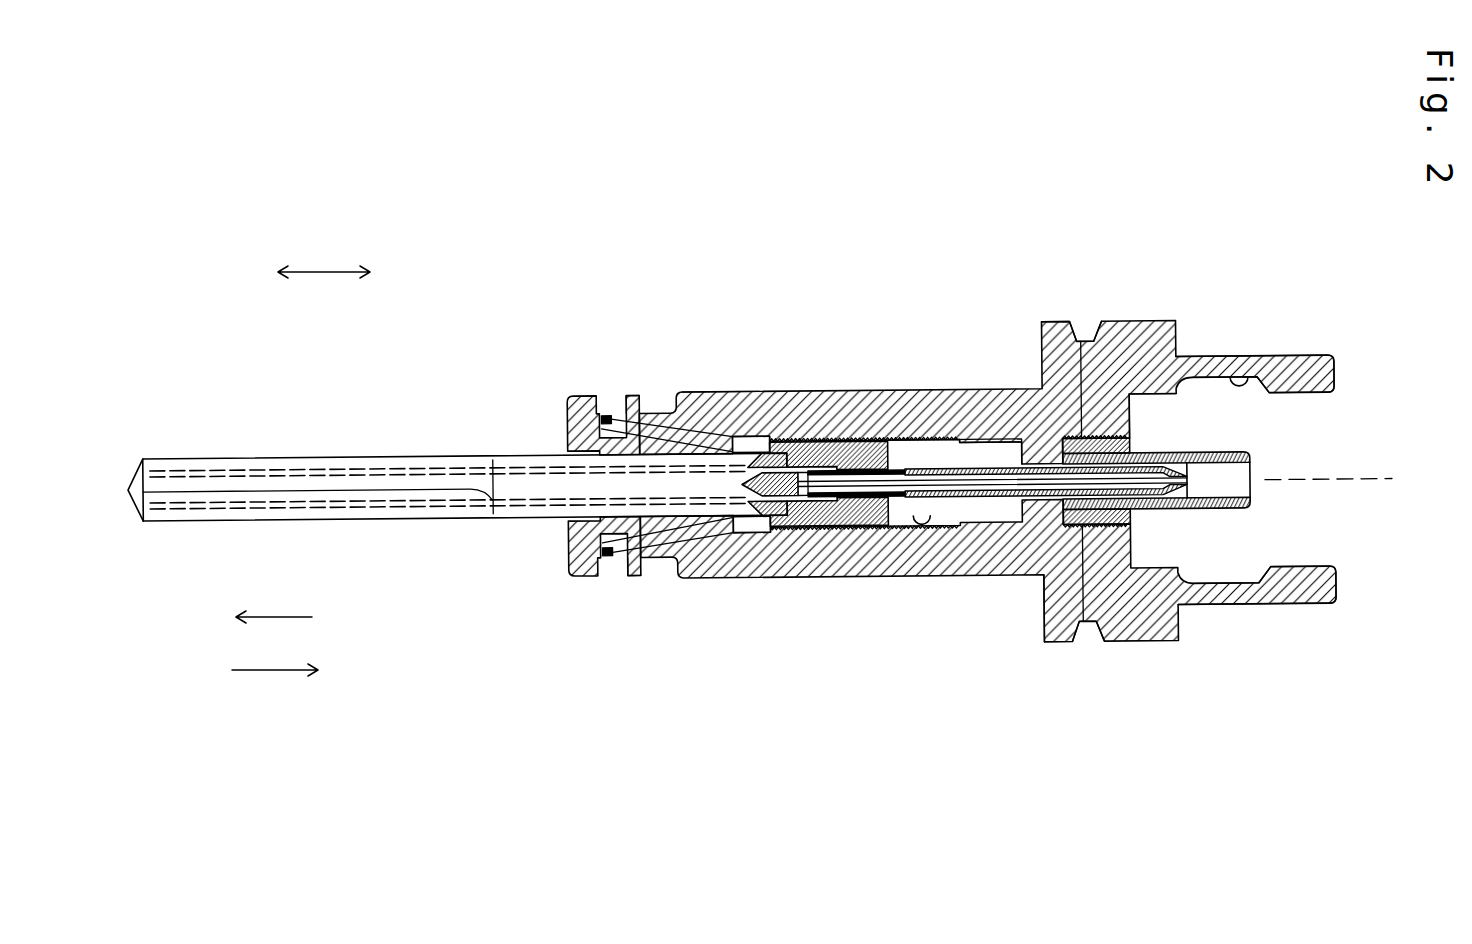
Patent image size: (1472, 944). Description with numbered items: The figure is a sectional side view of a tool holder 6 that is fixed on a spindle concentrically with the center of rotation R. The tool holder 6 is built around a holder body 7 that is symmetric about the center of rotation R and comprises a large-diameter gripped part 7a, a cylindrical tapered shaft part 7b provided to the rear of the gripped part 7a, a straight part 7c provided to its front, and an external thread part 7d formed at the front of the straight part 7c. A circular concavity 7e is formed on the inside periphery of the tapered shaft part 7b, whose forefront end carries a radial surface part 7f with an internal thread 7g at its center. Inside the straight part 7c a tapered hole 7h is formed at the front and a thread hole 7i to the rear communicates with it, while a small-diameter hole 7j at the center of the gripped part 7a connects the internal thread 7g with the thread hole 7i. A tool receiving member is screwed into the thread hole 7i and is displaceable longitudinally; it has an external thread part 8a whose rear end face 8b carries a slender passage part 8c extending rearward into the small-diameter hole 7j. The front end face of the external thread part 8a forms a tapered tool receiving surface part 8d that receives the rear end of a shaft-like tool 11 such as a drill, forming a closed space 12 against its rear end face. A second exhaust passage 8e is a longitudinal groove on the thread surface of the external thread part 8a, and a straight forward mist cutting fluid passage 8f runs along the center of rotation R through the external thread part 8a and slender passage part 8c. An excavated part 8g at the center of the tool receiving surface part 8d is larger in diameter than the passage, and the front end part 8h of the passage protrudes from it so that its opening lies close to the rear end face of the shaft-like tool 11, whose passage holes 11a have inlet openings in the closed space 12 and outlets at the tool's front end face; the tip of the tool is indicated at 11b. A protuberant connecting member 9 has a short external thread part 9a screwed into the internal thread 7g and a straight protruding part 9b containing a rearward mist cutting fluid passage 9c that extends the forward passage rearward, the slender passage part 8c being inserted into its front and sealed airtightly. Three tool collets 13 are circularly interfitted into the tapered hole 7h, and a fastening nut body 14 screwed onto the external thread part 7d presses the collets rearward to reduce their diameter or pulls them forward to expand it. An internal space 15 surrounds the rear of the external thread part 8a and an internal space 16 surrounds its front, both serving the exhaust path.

The tool holder 6 is at (932, 223).
The holder body 7 is at (896, 381).
The gripped part 7a is at (1078, 640).
The cylindrical tapered shaft part 7b is at (1325, 357).
The straight part 7c is at (757, 437).
The external thread part 7d is at (640, 415).
The circular concavity 7e is at (1257, 378).
The radial surface part 7f is at (1130, 416).
The internal thread 7g is at (1080, 338).
The tapered hole 7h is at (611, 415).
The thread hole 7i is at (925, 523).
The small-diameter hole 7j is at (1035, 560).
The external thread part 8a is at (877, 522).
The rear end face 8b is at (862, 440).
The slender passage part 8c is at (1000, 505).
The tapered tool receiving surface part 8d is at (750, 533).
The second exhaust passage 8e is at (819, 437).
The forward mist cutting fluid passage 8f is at (1000, 447).
The excavated part 8g is at (842, 522).
The front end part 8h is at (790, 437).
The protuberant connecting member 9 is at (1219, 521).
The external thread part 9a is at (1110, 520).
The straight protruding part 9b is at (1220, 452).
The rearward mist cutting fluid passage 9c is at (1245, 483).
The shaft-like tool 11 is at (350, 458).
The passage hole 11a is at (412, 473).
The cable tip 11b is at (130, 490).
The closed space 12 is at (806, 500).
The tool collet 13 is at (653, 565).
The fastening nut body 14 is at (578, 590).
The internal space 15 is at (950, 448).
The internal space 16 is at (716, 412).
The center of rotation R is at (1340, 482).